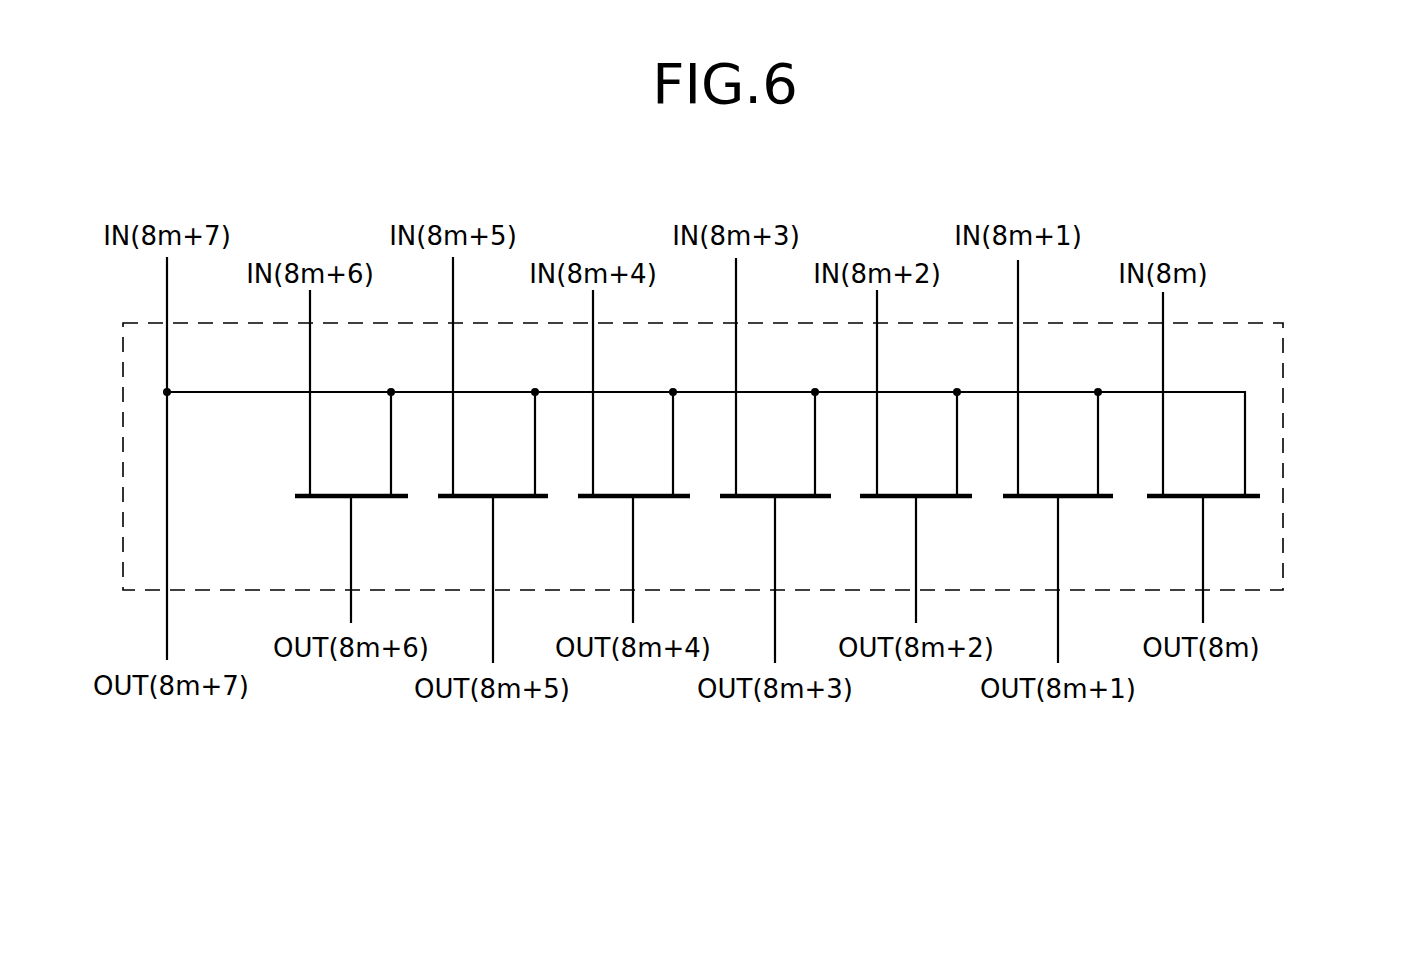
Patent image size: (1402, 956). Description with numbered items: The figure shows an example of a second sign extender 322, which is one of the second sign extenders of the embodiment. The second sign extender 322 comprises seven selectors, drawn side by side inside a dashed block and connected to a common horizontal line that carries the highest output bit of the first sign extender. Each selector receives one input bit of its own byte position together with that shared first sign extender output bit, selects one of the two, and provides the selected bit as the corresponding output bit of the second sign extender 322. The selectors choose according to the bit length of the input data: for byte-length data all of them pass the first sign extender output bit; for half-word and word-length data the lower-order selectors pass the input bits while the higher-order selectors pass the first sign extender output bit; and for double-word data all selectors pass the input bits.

The second sign extender 322 is at (1283, 457).